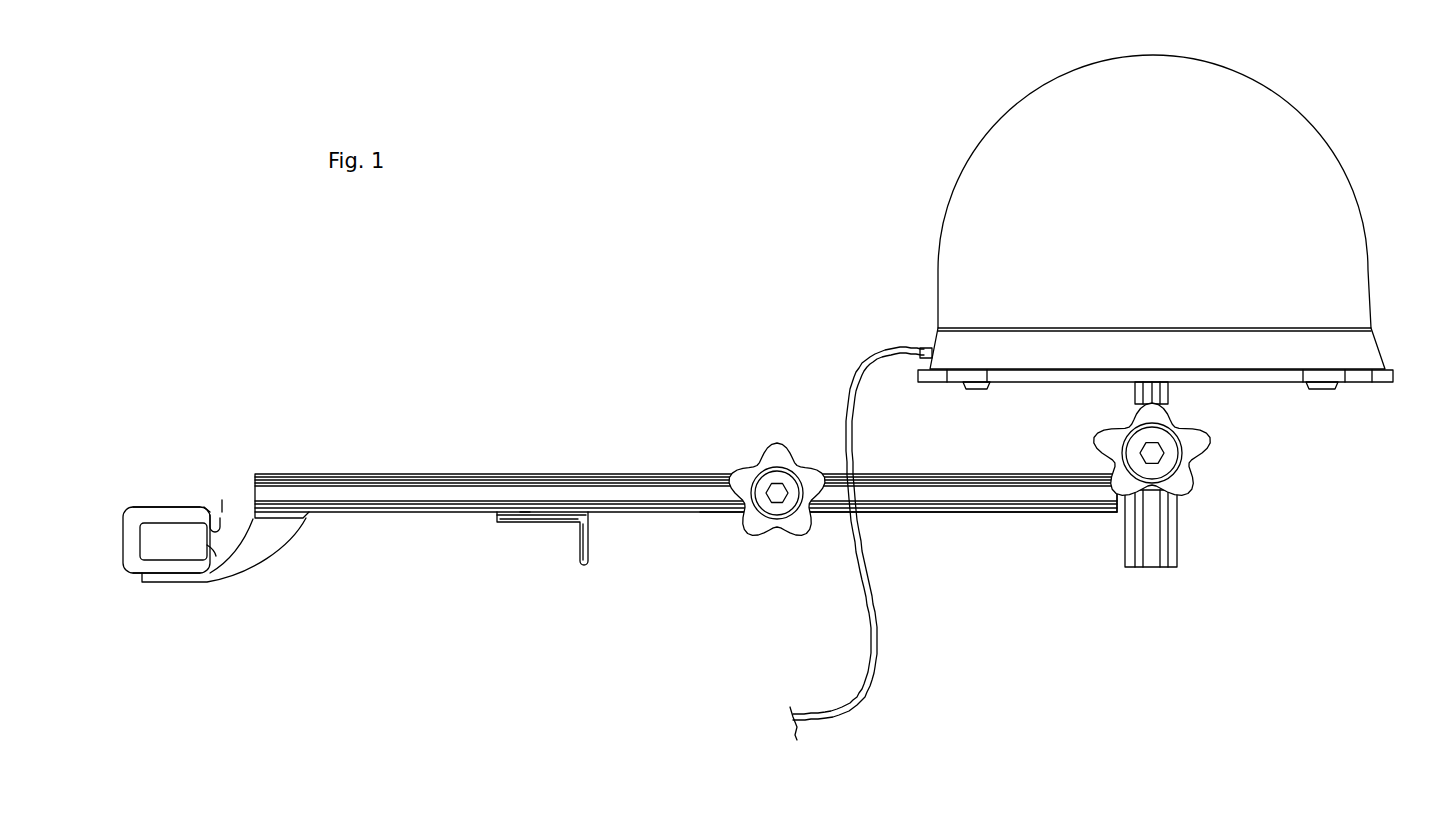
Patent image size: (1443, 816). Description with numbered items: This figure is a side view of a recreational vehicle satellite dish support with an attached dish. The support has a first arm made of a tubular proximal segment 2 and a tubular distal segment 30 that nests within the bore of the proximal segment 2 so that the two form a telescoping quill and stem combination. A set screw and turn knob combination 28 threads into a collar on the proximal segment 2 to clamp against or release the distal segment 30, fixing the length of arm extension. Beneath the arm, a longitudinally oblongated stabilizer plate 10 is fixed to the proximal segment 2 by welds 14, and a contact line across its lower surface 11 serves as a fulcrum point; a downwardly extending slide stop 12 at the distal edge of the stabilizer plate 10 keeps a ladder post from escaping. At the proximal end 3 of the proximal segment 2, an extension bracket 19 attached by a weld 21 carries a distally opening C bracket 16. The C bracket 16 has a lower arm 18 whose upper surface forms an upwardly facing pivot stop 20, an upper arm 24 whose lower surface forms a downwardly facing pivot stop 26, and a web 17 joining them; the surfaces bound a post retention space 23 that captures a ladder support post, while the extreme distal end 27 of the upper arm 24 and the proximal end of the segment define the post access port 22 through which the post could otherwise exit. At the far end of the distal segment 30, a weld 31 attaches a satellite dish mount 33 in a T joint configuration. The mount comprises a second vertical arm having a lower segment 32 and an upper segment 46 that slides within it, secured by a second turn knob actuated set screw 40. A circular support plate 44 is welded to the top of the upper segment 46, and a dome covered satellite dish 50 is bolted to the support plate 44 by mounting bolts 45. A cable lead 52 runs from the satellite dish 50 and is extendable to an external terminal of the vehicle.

The proximal segment 2 is at (687, 508).
The proximal end 3 is at (272, 485).
The stabilizer plate 10 is at (537, 522).
The lower surface 11 is at (552, 525).
The slide stop 12 is at (558, 513).
The welds 14 is at (523, 515).
The C bracket 16 is at (208, 547).
The web 17 is at (137, 546).
The lower arm 18 is at (167, 567).
The extension bracket 19 is at (255, 548).
The upwardly facing pivot stop 20 is at (193, 558).
The weld 21 is at (280, 518).
The post access port 22 is at (233, 518).
The post retention space 23 is at (178, 553).
The upper arm 24 is at (162, 513).
The downwardly facing pivot stop 26 is at (220, 518).
The extreme distal end 27 is at (211, 510).
The set screw and turn knob combination 28 is at (753, 523).
The distal segment 30 is at (922, 503).
The weld 31 is at (1120, 505).
The lower segment 32 is at (1167, 540).
The satellite dish mount 33 is at (1226, 508).
The set screw 40 is at (1260, 451).
The support plate 44 is at (1172, 427).
The mounting bolts 45 is at (1325, 390).
The upper segment 46 is at (1188, 395).
The dome covered satellite dish 50 is at (997, 170).
The cable lead 52 is at (855, 388).